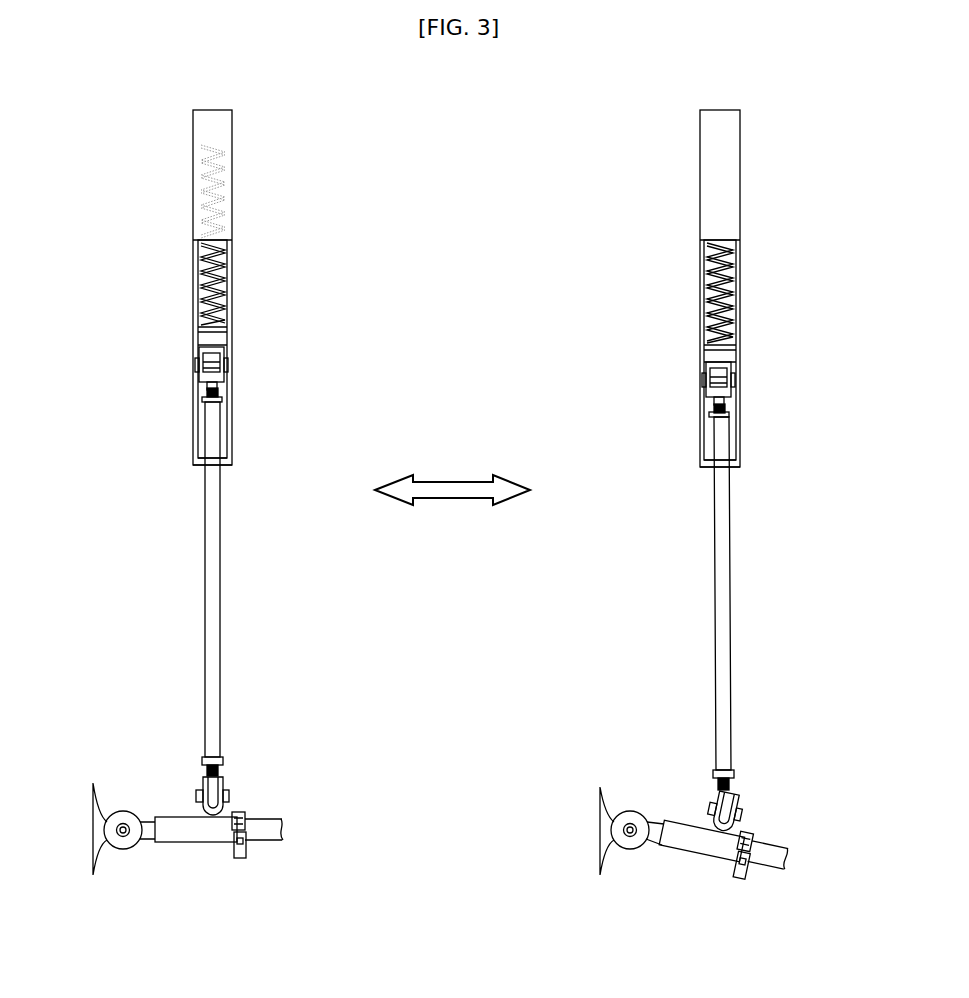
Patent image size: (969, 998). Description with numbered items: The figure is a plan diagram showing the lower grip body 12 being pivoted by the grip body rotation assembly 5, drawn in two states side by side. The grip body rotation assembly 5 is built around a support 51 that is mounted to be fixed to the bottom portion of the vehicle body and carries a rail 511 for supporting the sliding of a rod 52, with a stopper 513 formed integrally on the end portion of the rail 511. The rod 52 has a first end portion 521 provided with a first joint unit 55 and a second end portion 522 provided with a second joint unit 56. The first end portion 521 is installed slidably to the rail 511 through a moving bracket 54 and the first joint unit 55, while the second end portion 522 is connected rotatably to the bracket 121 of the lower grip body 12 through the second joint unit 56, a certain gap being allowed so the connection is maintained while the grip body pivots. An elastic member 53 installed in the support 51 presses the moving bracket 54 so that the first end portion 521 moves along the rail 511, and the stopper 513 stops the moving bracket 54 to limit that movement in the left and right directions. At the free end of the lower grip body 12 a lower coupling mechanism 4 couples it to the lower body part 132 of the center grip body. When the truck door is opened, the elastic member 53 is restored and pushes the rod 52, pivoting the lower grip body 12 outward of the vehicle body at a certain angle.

The grip body rotation assembly 5 is at (158, 374).
The support 51 is at (186, 181).
The rail 511 is at (194, 413).
The stopper 513 is at (226, 468).
The rod 52 is at (220, 632).
The first end portion 521 is at (218, 392).
The second end portion 522 is at (204, 762).
The elastic member 53 is at (220, 280).
The moving bracket 54 is at (203, 337).
The first joint unit 55 is at (210, 362).
The second joint unit 56 is at (215, 795).
The lower grip body 12 is at (185, 838).
The bracket 121 is at (197, 812).
The lower body part 132 is at (263, 836).
The lower coupling mechanism 4 is at (234, 875).